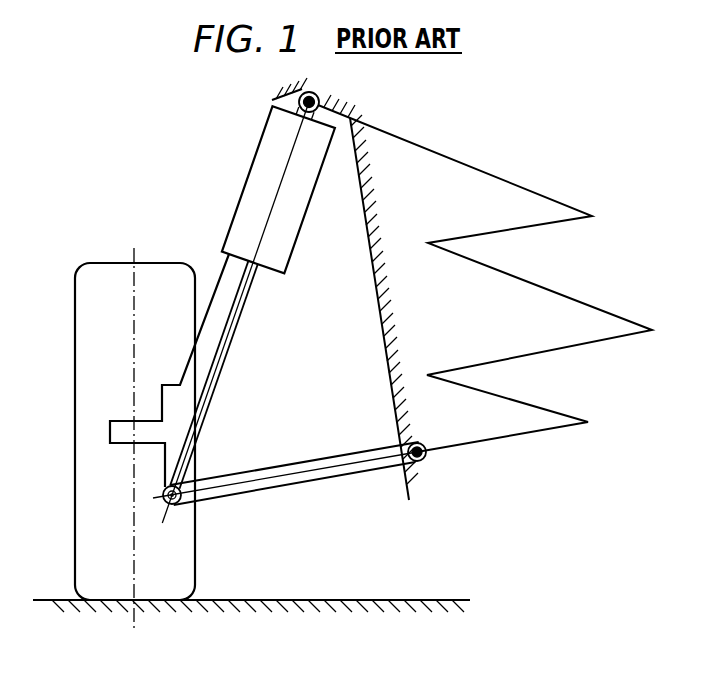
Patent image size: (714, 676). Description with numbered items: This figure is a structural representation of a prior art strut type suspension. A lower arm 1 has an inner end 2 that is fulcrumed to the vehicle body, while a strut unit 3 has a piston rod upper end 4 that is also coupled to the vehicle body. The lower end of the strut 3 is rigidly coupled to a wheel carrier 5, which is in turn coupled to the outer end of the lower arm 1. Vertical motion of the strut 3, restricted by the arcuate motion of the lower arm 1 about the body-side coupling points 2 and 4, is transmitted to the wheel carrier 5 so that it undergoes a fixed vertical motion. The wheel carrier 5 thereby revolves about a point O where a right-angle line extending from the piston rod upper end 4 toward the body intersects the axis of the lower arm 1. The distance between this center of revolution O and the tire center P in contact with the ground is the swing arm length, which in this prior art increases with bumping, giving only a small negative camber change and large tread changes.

The lower arm 1 is at (287, 478).
The inner end 2 is at (428, 462).
The strut unit 3 is at (215, 289).
The piston rod upper end 4 is at (322, 96).
The wheel carrier 5 is at (162, 398).
The center of revolution O is at (655, 315).
The tire center P is at (135, 456).